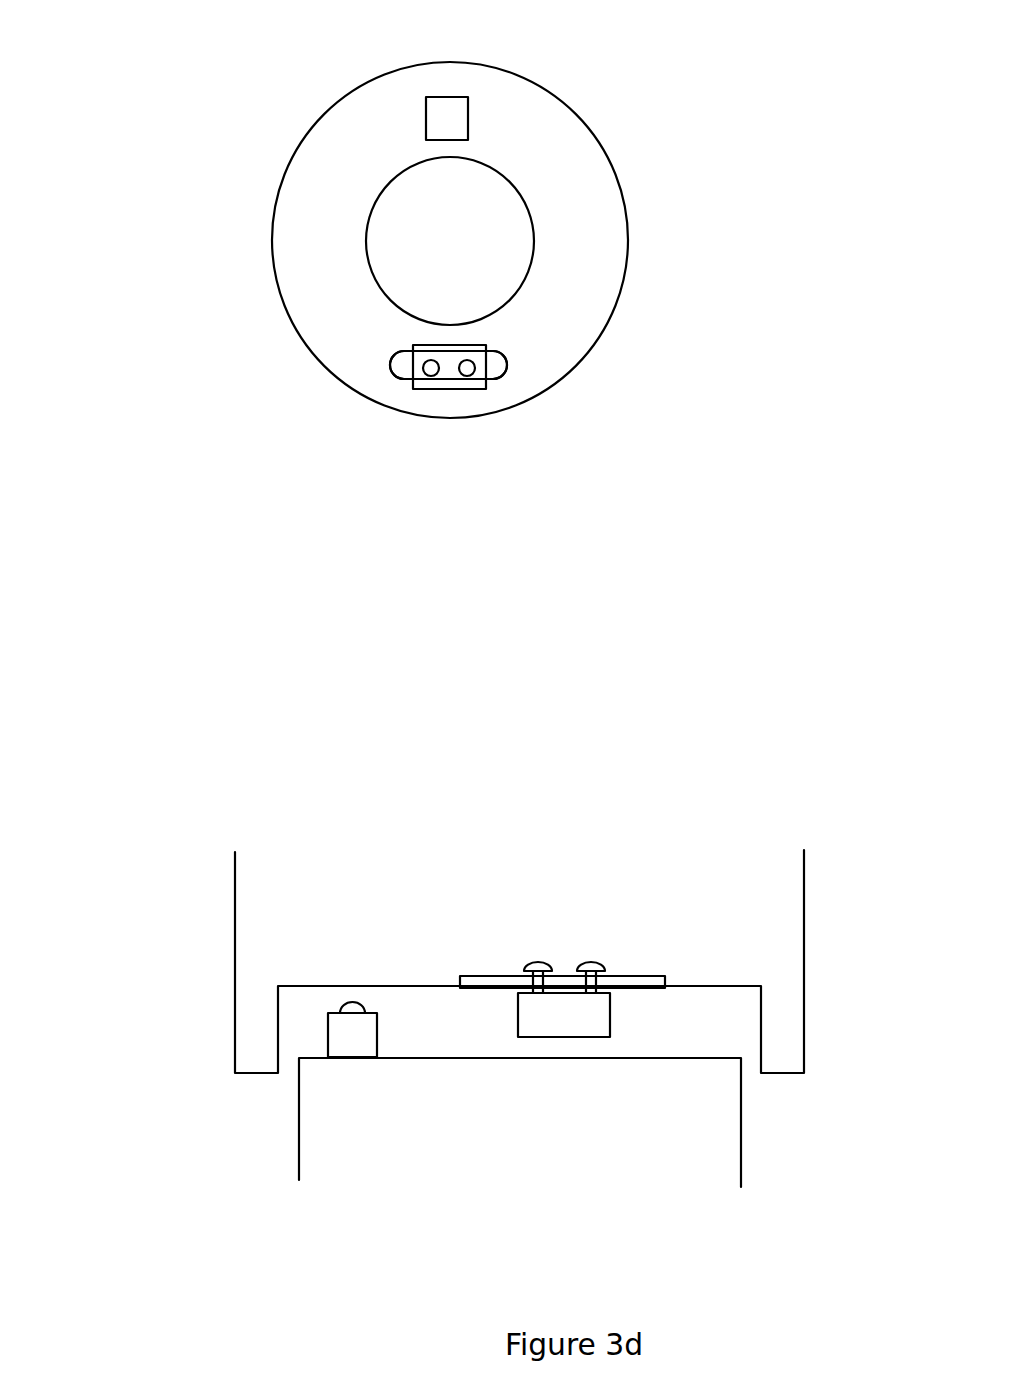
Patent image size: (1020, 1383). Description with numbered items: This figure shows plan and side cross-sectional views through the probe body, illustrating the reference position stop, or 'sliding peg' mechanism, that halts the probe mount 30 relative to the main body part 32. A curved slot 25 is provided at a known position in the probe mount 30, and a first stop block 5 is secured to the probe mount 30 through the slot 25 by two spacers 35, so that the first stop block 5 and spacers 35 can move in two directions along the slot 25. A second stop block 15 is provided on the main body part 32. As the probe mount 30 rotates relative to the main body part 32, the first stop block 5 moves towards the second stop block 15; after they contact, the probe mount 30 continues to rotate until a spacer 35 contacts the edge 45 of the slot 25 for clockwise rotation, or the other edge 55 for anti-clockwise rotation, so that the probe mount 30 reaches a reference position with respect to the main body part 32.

The first stop block 5 is at (488, 387).
The second stop block 15 is at (450, 105).
The curved slot 25 is at (445, 360).
The probe mount 30 is at (602, 232).
The main body part 32 is at (483, 195).
The spacers 35 is at (467, 375).
The edge of the slot 45 is at (507, 360).
The other edge of the slot 55 is at (393, 357).